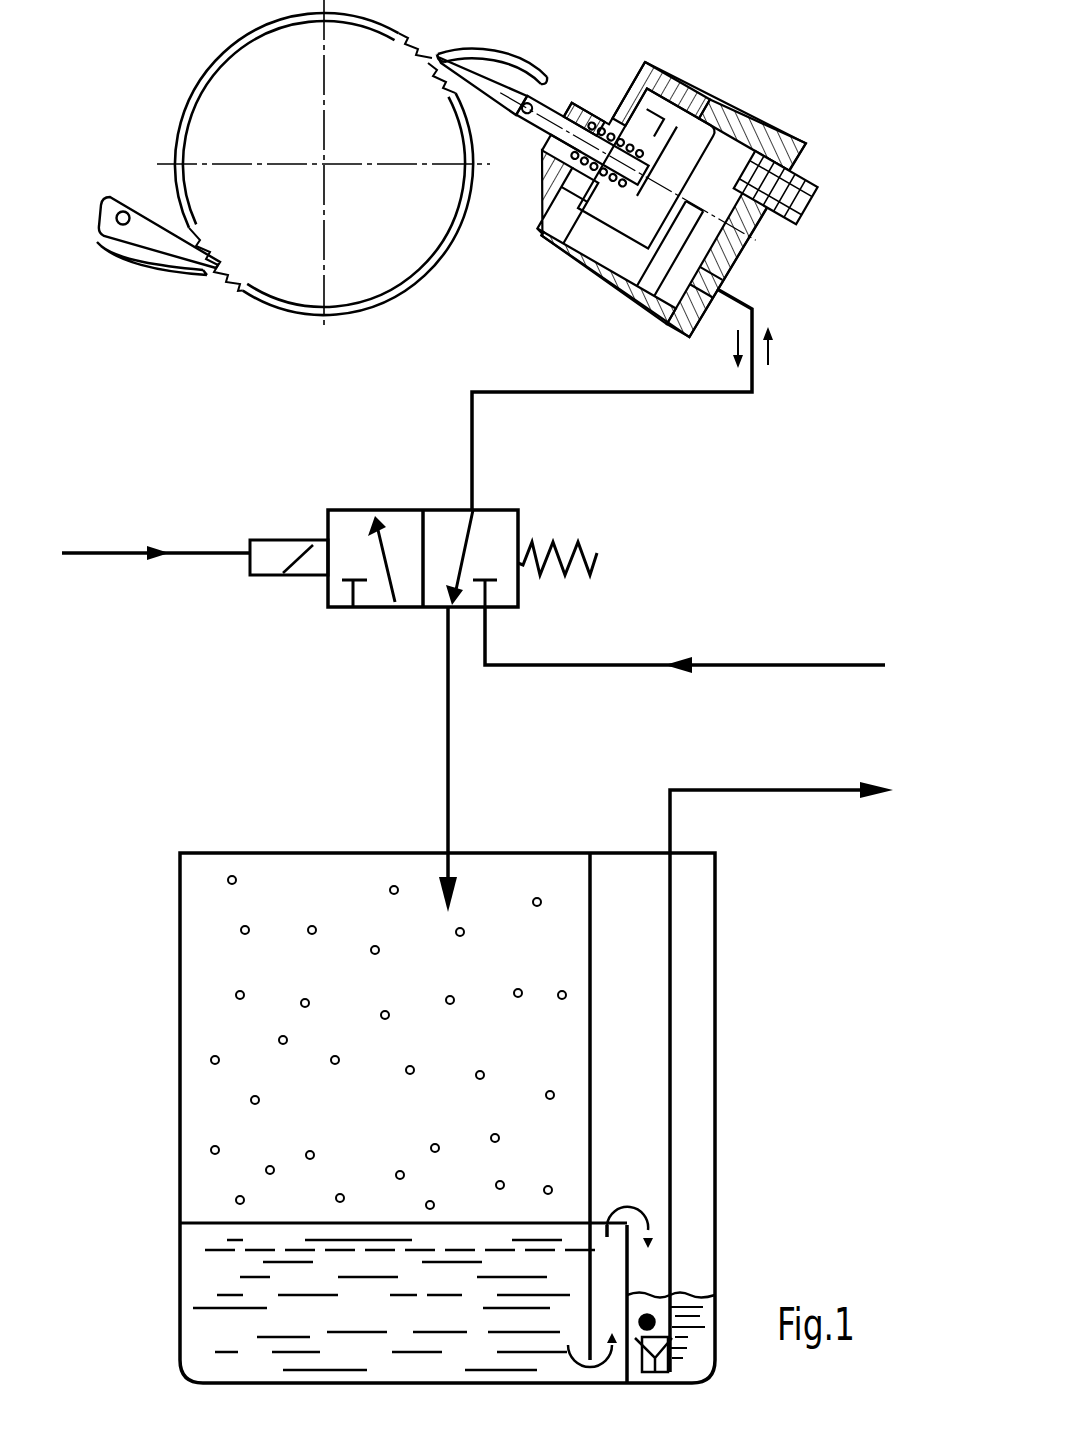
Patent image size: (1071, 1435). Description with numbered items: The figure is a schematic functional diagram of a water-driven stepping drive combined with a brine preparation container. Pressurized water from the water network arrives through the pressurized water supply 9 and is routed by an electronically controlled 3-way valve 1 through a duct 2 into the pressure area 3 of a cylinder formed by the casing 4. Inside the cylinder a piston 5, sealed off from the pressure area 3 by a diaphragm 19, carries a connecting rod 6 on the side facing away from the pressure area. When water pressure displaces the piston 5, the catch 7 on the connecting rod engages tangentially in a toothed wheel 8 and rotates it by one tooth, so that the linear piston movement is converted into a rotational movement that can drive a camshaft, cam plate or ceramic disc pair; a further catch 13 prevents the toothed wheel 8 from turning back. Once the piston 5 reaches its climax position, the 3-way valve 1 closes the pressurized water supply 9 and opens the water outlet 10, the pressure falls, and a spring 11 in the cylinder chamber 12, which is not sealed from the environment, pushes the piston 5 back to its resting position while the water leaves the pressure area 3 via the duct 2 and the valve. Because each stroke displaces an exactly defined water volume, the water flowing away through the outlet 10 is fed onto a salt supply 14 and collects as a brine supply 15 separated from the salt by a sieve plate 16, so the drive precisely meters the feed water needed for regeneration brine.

The 3-way valve 1 is at (420, 608).
The duct 2 is at (473, 448).
The pressure area 3 is at (760, 118).
The casing 4 is at (730, 118).
The piston 5 is at (687, 70).
The connecting rod 6 is at (551, 111).
The catch 7 is at (490, 72).
The toothed wheel 8 is at (280, 68).
The pressurized water supply 9 is at (590, 665).
The water outlet 10 is at (448, 793).
The spring 11 is at (572, 176).
The cylinder chamber 12 is at (565, 243).
The further catch 13 is at (160, 236).
The salt supply 14 is at (265, 1022).
The brine supply 15 is at (235, 1320).
The sieve plate 16 is at (225, 1243).
The diaphragm 19 is at (733, 257).